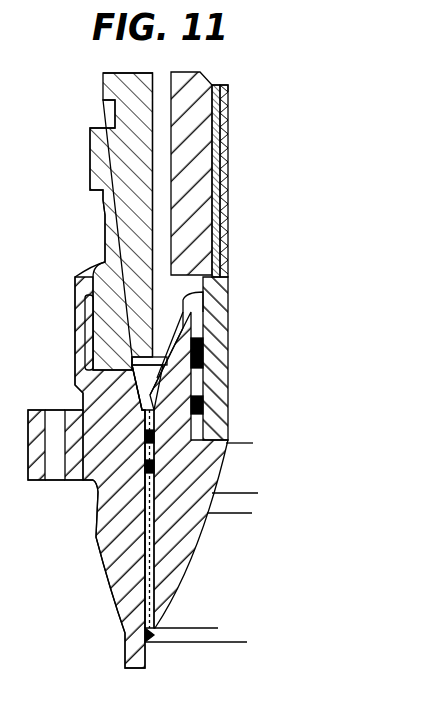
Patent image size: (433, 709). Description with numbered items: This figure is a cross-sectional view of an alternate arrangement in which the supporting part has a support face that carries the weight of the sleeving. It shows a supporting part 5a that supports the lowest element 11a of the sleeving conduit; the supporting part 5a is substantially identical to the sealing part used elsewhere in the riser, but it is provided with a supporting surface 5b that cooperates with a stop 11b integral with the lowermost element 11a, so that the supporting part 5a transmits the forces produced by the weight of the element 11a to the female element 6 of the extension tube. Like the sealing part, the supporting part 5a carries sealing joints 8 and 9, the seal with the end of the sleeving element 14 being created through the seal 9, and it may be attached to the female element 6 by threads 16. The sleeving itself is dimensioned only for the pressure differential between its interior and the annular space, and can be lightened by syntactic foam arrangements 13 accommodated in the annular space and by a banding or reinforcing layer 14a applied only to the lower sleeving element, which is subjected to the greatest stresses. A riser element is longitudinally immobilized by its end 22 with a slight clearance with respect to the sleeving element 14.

The supporting part 5a is at (182, 528).
The supporting surface 5b is at (203, 318).
The female element 6 is at (118, 583).
The sealing joint 8 is at (222, 465).
The sealing joint 9 is at (205, 401).
The lowest element of the sleeving conduit 11a is at (215, 358).
The stop 11b is at (228, 290).
The syntactic foam arrangements 13 is at (197, 110).
The short sleeving element 14 is at (228, 135).
The banding or reinforcing layer 14a is at (226, 178).
The threads 16 is at (149, 590).
The end of riser element 22 is at (128, 333).